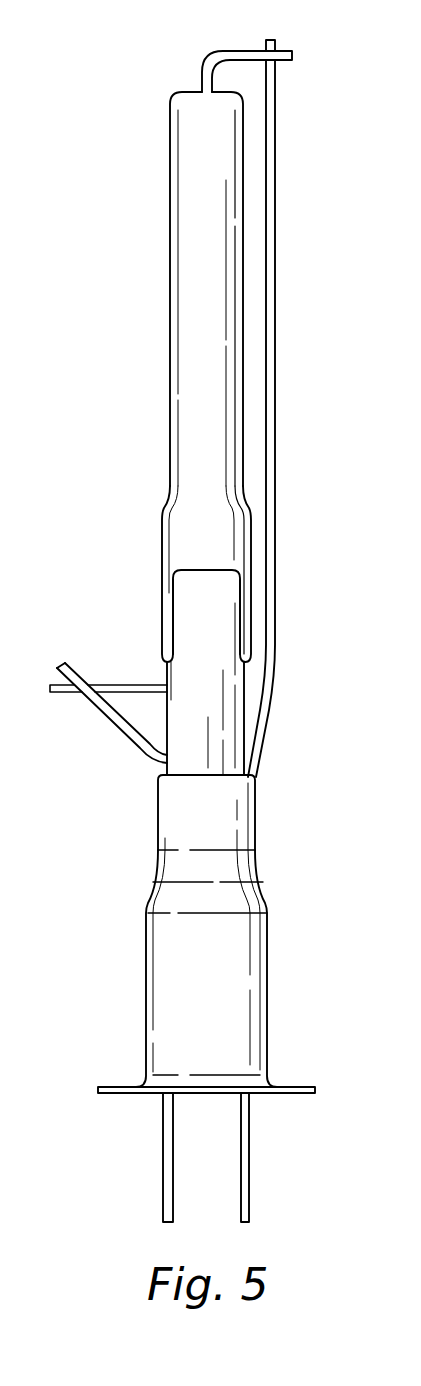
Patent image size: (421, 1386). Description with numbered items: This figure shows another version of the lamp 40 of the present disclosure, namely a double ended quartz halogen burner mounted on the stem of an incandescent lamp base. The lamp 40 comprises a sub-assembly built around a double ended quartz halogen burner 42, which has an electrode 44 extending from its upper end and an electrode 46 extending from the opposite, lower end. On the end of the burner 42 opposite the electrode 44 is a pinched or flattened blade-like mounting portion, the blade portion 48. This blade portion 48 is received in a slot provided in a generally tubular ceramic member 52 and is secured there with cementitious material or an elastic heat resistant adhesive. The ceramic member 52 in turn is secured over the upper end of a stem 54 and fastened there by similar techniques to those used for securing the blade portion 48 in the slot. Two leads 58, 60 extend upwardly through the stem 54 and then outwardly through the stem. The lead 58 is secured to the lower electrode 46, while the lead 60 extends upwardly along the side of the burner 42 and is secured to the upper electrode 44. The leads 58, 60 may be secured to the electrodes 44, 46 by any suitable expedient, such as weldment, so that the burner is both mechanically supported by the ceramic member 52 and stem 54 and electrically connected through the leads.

The lamp 40 is at (141, 167).
The double ended quartz halogen burner 42 is at (183, 313).
The electrode 44 is at (248, 52).
The electrode 46 is at (98, 717).
The blade portion 48 is at (202, 536).
The tubular ceramic member 52 is at (210, 702).
The stem 54 is at (175, 951).
The lead 58 is at (165, 1160).
The lead 60 is at (273, 235).